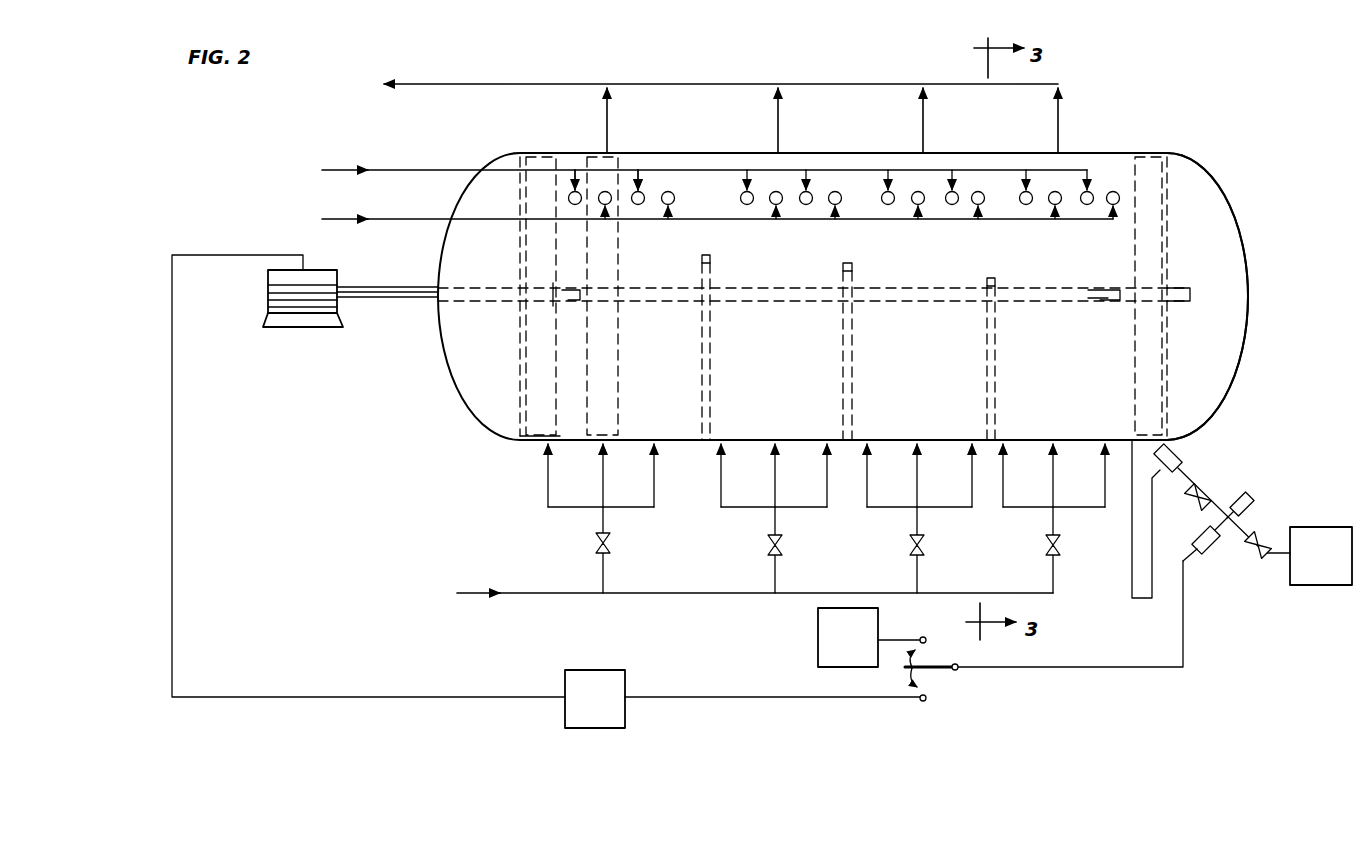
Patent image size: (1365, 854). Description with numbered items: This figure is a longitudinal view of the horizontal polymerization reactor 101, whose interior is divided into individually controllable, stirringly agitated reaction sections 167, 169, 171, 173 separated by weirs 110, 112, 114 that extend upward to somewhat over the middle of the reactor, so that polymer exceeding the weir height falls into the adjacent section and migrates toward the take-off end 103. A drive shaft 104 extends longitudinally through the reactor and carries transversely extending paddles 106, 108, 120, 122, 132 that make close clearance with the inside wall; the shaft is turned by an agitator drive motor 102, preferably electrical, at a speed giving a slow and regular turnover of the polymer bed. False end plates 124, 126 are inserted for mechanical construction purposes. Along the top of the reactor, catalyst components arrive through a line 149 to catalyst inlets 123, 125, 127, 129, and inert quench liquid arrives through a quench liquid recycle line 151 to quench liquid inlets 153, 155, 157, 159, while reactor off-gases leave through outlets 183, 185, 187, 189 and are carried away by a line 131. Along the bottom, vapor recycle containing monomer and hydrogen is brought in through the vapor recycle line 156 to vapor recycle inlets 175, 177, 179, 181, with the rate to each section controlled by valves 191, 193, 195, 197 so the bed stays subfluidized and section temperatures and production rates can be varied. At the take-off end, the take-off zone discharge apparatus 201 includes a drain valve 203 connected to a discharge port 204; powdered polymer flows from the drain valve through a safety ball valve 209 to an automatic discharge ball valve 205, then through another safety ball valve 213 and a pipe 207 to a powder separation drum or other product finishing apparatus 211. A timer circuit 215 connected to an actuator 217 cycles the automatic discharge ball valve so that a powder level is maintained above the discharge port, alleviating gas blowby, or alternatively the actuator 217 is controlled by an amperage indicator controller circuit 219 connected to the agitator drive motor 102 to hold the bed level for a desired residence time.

The horizontal polymerization reactor 101 is at (1222, 414).
The agitator drive motor 102 is at (268, 290).
The take-off end 103 is at (1218, 368).
The drive shaft 104 is at (416, 287).
The paddle 106 is at (535, 393).
The paddle 108 is at (555, 315).
The weir 110 is at (702, 390).
The weir 112 is at (843, 395).
The weir 114 is at (987, 396).
The paddle 120 is at (1156, 273).
The paddle 122 is at (582, 292).
The catalyst inlet 123 is at (630, 192).
The false end plate 124 is at (1170, 182).
The catalyst inlet 125 is at (800, 192).
The false end plate 126 is at (520, 425).
The catalyst inlet 127 is at (946, 192).
The catalyst inlet 129 is at (1082, 192).
The off-gas line 131 is at (696, 84).
The paddle 132 is at (1104, 288).
The catalyst line 149 is at (380, 172).
The quench liquid recycle line 151 is at (380, 221).
The quench liquid inlet 153 is at (668, 206).
The quench liquid inlet 155 is at (832, 205).
The vapor recycle line 156 is at (548, 595).
The quench liquid inlet 157 is at (975, 205).
The quench liquid inlet 159 is at (1110, 205).
The reaction section 167 is at (668, 361).
The reaction section 169 is at (790, 361).
The reaction section 171 is at (924, 361).
The reaction section 173 is at (1068, 361).
The vapor recycle inlet 175 is at (598, 490).
The vapor recycle inlet 177 is at (772, 490).
The vapor recycle inlet 179 is at (912, 490).
The vapor recycle inlet 181 is at (1048, 490).
The off-gas outlet 183 is at (1059, 152).
The off-gas outlet 185 is at (924, 152).
The off-gas outlet 187 is at (779, 152).
The off-gas outlet 189 is at (608, 152).
The valve 191 is at (610, 543).
The valve 193 is at (782, 548).
The valve 195 is at (925, 548).
The valve 197 is at (1060, 556).
The take-off zone discharge apparatus 201 is at (1155, 548).
The drain valve 203 is at (1136, 492).
The discharge port 204 is at (1172, 448).
The automatic discharge ball valve 205 is at (1254, 508).
The pipe 207 is at (1270, 560).
The ball valve 209 is at (1192, 505).
The product finishing apparatus 211 is at (1336, 568).
The ball valve 213 is at (1260, 556).
The timer circuit 215 is at (830, 628).
The actuator 217 is at (1216, 551).
The amperage indicator controller circuit 219 is at (590, 690).